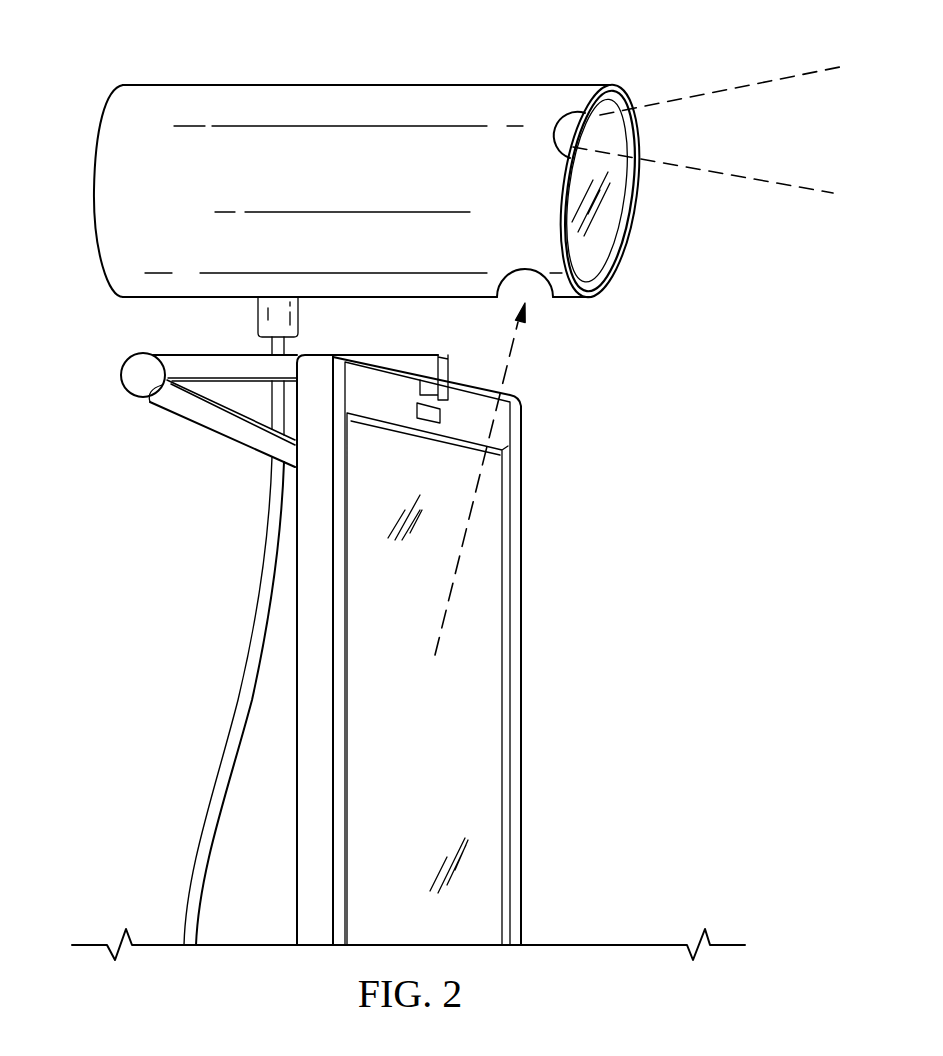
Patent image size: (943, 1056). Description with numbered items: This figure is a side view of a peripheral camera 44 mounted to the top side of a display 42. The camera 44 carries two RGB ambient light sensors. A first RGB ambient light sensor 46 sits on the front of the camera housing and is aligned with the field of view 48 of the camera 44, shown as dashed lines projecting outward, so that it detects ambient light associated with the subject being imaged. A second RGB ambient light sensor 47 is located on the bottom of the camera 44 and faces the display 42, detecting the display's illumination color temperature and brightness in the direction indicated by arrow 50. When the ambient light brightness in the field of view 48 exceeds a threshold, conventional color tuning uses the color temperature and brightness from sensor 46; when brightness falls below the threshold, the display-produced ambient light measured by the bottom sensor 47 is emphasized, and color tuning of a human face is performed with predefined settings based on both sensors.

The display 42 is at (522, 722).
The peripheral camera 44 is at (92, 174).
The first RGB ambient light sensor 46 is at (566, 126).
The second RGB ambient light sensor 47 is at (518, 278).
The field of view 48 is at (722, 91).
The arrow 50 is at (513, 347).